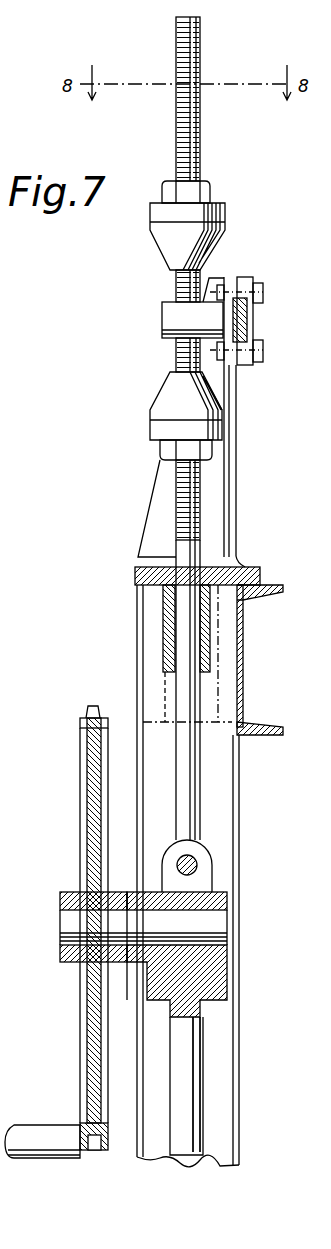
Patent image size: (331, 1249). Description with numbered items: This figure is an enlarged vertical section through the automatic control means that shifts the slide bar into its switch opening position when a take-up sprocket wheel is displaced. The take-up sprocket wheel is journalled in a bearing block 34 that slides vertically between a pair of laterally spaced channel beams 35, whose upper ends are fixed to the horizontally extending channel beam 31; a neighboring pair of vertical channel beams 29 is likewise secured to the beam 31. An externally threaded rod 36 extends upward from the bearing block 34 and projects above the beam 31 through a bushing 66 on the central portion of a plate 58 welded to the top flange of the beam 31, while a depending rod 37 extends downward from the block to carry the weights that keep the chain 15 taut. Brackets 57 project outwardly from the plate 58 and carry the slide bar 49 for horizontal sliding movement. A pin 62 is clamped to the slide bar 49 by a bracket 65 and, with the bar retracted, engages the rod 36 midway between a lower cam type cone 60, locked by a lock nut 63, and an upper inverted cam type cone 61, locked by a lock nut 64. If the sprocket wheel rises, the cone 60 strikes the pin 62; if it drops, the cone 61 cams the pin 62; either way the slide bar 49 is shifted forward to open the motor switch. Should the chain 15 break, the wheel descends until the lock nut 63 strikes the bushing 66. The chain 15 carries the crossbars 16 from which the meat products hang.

The endless chain 15 is at (104, 1152).
The crossbar 16 is at (24, 1125).
The channel beam 29 is at (87, 843).
The channel beam 31 is at (243, 673).
The bearing block 34 is at (218, 962).
The channel beam 35 is at (240, 843).
The upwardly extending rod 36 is at (202, 133).
The depending rod 37 is at (195, 1080).
The slide bar 49 is at (247, 322).
The bracket 57 is at (217, 379).
The plate 58 is at (254, 565).
The lower cam type cone 60 is at (162, 398).
The inverted cam type cone 61 is at (222, 241).
The pin 62 is at (162, 318).
The lock nut 63 is at (208, 451).
The lock nut 64 is at (212, 190).
The bracket 65 is at (230, 278).
The bushing 66 is at (210, 620).